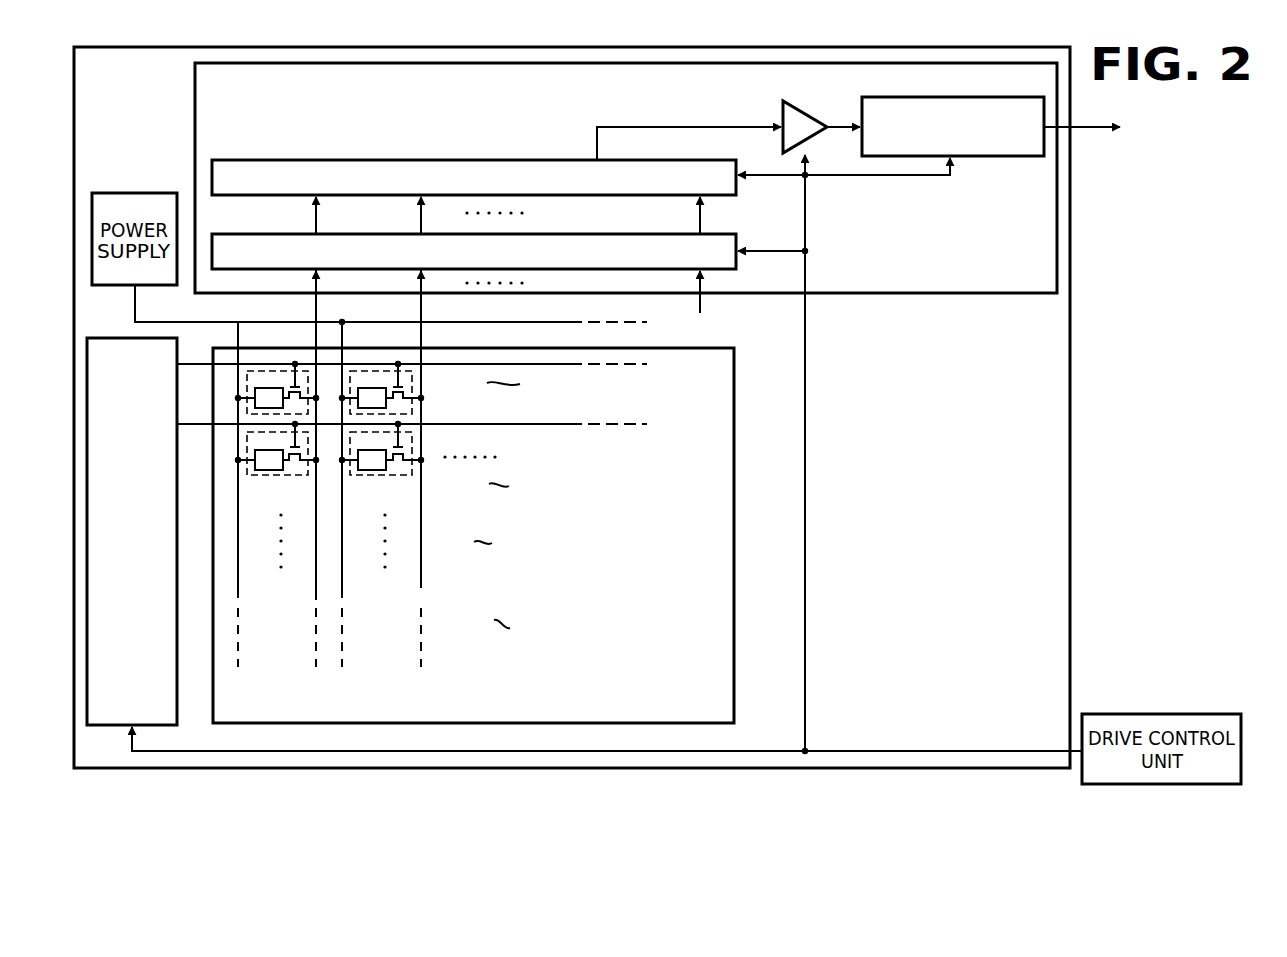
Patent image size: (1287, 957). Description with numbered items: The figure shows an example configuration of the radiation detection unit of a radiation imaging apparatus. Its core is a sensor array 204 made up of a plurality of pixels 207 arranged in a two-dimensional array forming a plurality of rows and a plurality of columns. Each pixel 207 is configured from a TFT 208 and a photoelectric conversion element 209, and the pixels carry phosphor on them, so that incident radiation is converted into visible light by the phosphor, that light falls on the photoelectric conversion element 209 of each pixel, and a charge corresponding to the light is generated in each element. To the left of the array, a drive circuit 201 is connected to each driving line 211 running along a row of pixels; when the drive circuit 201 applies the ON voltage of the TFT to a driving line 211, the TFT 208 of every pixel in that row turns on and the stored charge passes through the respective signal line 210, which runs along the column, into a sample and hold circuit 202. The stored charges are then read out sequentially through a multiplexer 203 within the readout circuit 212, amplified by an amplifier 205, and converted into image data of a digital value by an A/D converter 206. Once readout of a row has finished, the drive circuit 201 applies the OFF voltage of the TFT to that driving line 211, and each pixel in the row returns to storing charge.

The drive circuit 201 is at (108, 338).
The sample and hold circuit 202 is at (264, 234).
The multiplexer 203 is at (264, 160).
The sensor array 204 is at (734, 650).
The amplifier 205 is at (783, 115).
The A/D converter 206 is at (1010, 156).
The pixel 207 is at (412, 378).
The TFT 208 is at (399, 462).
The photoelectric conversion element 209 is at (372, 470).
The signal line 210 is at (421, 588).
The driving line 211 is at (545, 425).
The readout circuit 212 is at (195, 110).